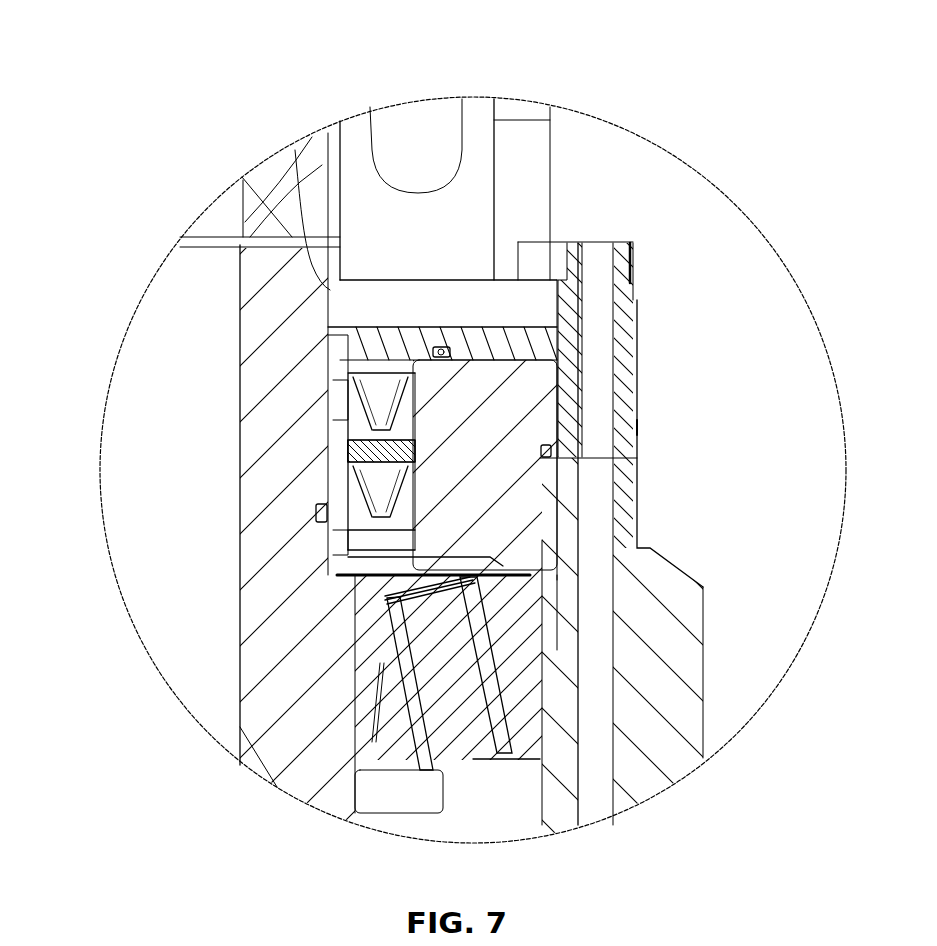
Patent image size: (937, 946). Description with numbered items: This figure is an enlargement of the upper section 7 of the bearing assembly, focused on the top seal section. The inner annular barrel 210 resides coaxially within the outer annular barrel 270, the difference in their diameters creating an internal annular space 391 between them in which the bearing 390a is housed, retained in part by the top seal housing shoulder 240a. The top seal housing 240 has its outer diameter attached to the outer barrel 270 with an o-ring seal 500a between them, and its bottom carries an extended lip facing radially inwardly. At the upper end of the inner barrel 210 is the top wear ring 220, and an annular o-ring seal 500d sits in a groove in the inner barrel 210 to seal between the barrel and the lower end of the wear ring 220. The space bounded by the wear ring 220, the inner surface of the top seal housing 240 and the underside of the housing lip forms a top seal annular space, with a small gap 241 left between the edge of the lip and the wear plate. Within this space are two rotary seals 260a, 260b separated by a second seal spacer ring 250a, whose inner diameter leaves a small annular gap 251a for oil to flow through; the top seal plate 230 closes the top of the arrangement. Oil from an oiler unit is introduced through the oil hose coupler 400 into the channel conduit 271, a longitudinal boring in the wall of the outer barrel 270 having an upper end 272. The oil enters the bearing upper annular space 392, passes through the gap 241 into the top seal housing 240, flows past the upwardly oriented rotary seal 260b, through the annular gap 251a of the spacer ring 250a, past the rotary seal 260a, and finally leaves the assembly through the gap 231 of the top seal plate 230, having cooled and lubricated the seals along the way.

The upper section 7 is at (806, 292).
The inner annular barrel 210 is at (240, 727).
The top wear ring 220 is at (247, 240).
The top seal plate 230 is at (330, 212).
The gap 231 is at (333, 337).
The top seal housing 240 is at (457, 390).
The top seal housing shoulder 240a is at (557, 578).
The gap 241 is at (350, 550).
The second seal spacer ring 250a is at (333, 462).
The annular gap 251a is at (350, 444).
The rotary seal 260a is at (335, 405).
The rotary seal 260b is at (345, 540).
The outer annular barrel 270 is at (653, 577).
The channel conduit 271 is at (596, 264).
The upper end 272 is at (637, 428).
The bearing 390a is at (355, 757).
The internal annular space 391 is at (490, 827).
The bearing upper annular space 392 is at (467, 560).
The oil hose coupler 400 is at (633, 300).
The o-ring seal 500a is at (545, 450).
The annular o-ring seal 500d is at (316, 517).